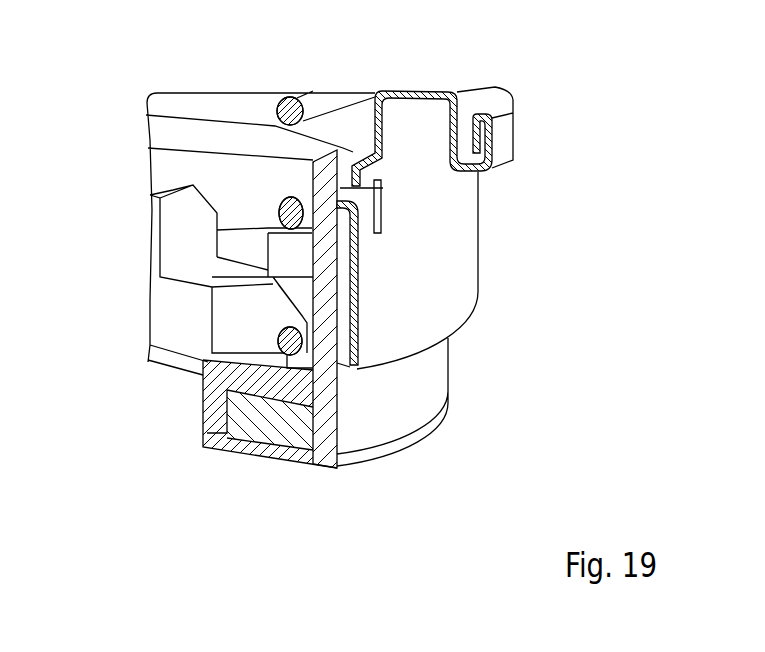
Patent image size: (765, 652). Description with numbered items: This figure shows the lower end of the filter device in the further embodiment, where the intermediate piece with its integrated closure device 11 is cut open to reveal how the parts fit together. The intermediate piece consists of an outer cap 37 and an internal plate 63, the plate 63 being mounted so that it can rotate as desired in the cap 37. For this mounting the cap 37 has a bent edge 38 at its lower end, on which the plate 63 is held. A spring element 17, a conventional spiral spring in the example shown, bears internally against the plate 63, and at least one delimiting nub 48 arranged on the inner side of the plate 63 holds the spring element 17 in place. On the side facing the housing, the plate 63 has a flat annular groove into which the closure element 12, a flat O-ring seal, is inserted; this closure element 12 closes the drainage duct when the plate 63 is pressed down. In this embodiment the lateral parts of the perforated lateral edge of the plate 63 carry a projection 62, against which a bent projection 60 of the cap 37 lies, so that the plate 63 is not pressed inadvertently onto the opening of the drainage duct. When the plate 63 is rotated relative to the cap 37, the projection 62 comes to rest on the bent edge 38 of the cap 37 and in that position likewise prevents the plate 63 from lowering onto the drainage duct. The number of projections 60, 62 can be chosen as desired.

The closure device 11 is at (188, 476).
The closure element 12 is at (265, 441).
The spring element 17 is at (274, 99).
The cap 37 is at (486, 232).
The bent edge 38 is at (356, 373).
The delimiting nub 48 is at (232, 321).
The bent projection 60 is at (365, 205).
The projection 62 is at (352, 160).
The plate 63 is at (197, 407).